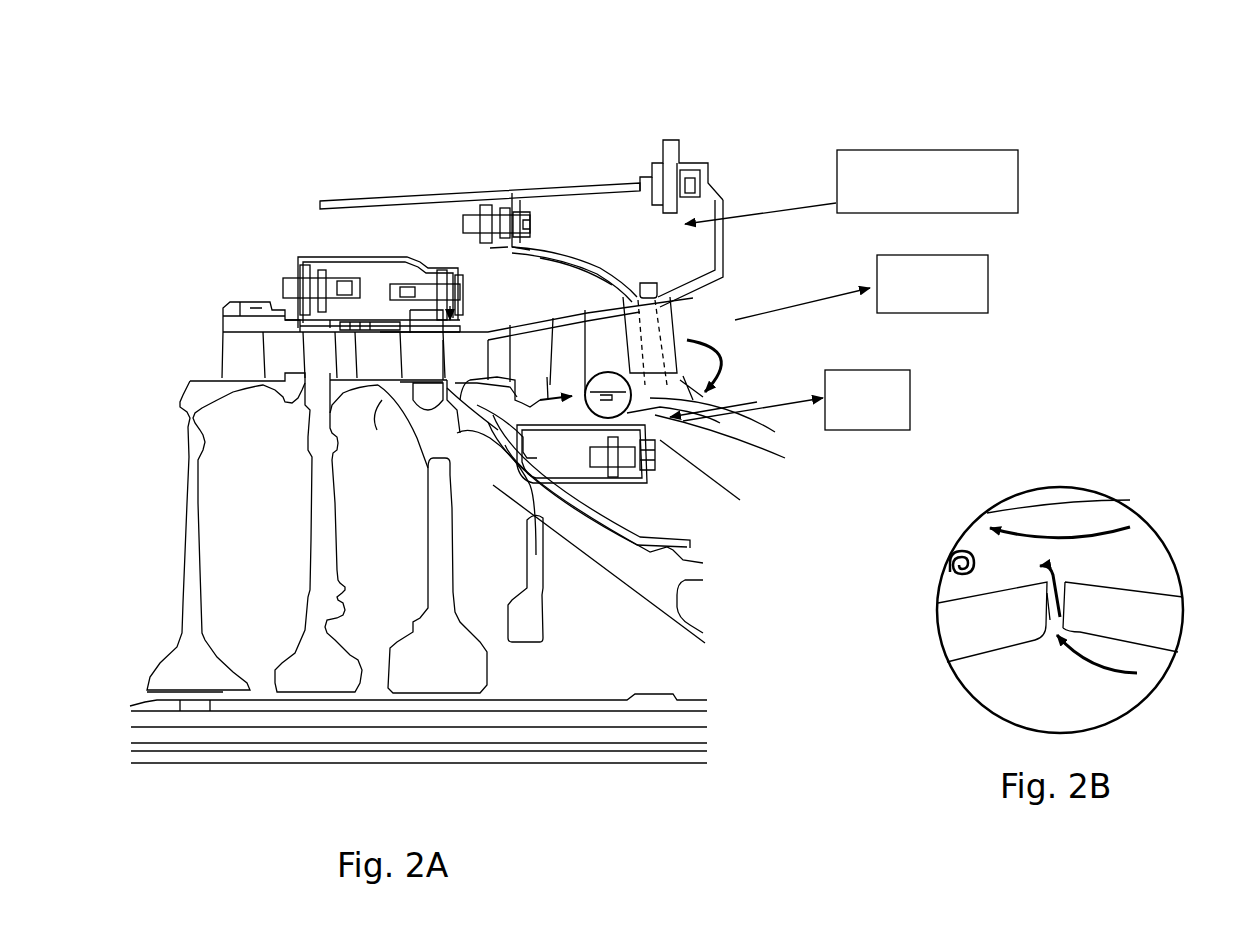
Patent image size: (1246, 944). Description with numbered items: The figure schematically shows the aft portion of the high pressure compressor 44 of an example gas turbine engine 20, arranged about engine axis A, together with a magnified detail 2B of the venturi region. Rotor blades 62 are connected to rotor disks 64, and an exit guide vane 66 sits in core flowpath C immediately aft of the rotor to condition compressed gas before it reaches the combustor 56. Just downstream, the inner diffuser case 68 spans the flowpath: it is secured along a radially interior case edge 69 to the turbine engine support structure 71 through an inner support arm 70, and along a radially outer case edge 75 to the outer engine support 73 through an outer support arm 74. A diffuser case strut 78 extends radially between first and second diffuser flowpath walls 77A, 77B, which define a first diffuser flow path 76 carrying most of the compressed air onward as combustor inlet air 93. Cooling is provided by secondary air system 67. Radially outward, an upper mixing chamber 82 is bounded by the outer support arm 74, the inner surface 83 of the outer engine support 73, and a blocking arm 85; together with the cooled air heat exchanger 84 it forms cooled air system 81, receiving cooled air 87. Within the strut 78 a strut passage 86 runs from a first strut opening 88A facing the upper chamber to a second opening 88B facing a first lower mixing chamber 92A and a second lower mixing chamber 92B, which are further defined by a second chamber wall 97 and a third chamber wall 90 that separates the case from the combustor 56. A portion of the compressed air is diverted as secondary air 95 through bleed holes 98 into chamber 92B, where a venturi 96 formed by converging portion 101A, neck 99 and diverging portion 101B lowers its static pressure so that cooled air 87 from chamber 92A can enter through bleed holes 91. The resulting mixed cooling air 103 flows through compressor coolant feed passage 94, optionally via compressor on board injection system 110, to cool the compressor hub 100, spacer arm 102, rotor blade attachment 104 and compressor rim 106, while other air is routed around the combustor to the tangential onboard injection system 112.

In FIG. 2A, the engine 20 is at (752, 100).
In FIG. 2A, the high pressure compressor 44 is at (183, 297).
In FIG. 2A, the combustor 56 is at (990, 285).
In FIG. 2A, the rotor blades 62 is at (312, 352).
In FIG. 2A, the rotor disks 64 is at (323, 413).
In FIG. 2A, the exit guide vane 66 is at (445, 369).
In FIG. 2A, the secondary air system 67 is at (650, 245).
In FIG. 2A, the inner diffuser case 68 is at (535, 272).
In FIG. 2A, the radially interior case edge/flange 69 is at (612, 418).
In FIG. 2A, the inner support arm 70 is at (657, 400).
In FIG. 2A, the turbine engine support structure 71 is at (637, 500).
In FIG. 2A, the outer engine support 73 is at (463, 190).
In FIG. 2A, the outer support arm 74 is at (615, 270).
In FIG. 2A, the radially outer case edge/flange 75 is at (530, 230).
In FIG. 2A, the first diffuser flow path 76 is at (520, 358).
In FIG. 2A, the first diffuser flowpath wall 77A is at (552, 317).
In FIG. 2A, the second diffuser flowpath wall 77B is at (633, 373).
In FIG. 2B, the second diffuser flowpath wall 77B is at (1020, 500).
In FIG. 2A, the diffuser case strut 78 is at (625, 292).
In FIG. 2A, the cooled air system 81 is at (797, 185).
In FIG. 2A, the upper mixing chamber 82 is at (615, 210).
In FIG. 2A, the inner surface 83 is at (547, 198).
In FIG. 2A, the cooled air heat exchanger 84 is at (1018, 190).
In FIG. 2A, the second support or blocking arm 85 is at (725, 253).
In FIG. 2A, the strut passage 86 is at (630, 330).
In FIG. 2A, the cooled air 87 is at (762, 205).
In FIG. 2A, the first strut opening 88A is at (647, 282).
In FIG. 2A, the second opening 88B is at (690, 423).
In FIG. 2A, the third chamber wall 90 is at (775, 440).
In FIG. 2B, the bleed holes 91 is at (1062, 627).
In FIG. 2A, the first lower mixing chamber 92A is at (775, 460).
In FIG. 2B, the first lower mixing chamber 92A is at (1085, 667).
In FIG. 2B, the second lower mixing chamber 92B is at (1143, 555).
In FIG. 2A, the combustor inlet air 93 is at (800, 302).
In FIG. 2A, the compressor coolant feed passage 94 is at (547, 377).
In FIG. 2A, the secondary air 95 is at (737, 362).
In FIG. 2B, the secondary air 95 is at (1112, 525).
In FIG. 2A, the venturi 96 is at (557, 410).
In FIG. 2B, the venturi 96 is at (955, 536).
In FIG. 2A, the second chamber wall 97 is at (617, 398).
In FIG. 2B, the second chamber wall 97 is at (1150, 617).
In FIG. 2A, the bleed holes 98 is at (690, 400).
In FIG. 2B, the neck 99 is at (1062, 515).
In FIG. 2A, the compressor hub 100 is at (443, 527).
In FIG. 2B, the converging portion 101A is at (1123, 600).
In FIG. 2B, the diverging portion 101B is at (992, 605).
In FIG. 2A, the spacer arm 102 is at (468, 452).
In FIG. 2B, the mixed cooling air 103 is at (950, 580).
In FIG. 2A, the rotor blade attachment 104 is at (400, 366).
In FIG. 2A, the compressor rim 106 is at (445, 447).
In FIG. 2A, the compressor on board injection system 110 is at (495, 515).
In FIG. 2A, the tangential onboard injection system 112 is at (865, 370).
In FIG. 2A, the engine axis A is at (165, 765).
In FIG. 2A, the core flowpath C is at (245, 355).
In FIG. 2A, the magnified view 2B is at (600, 417).